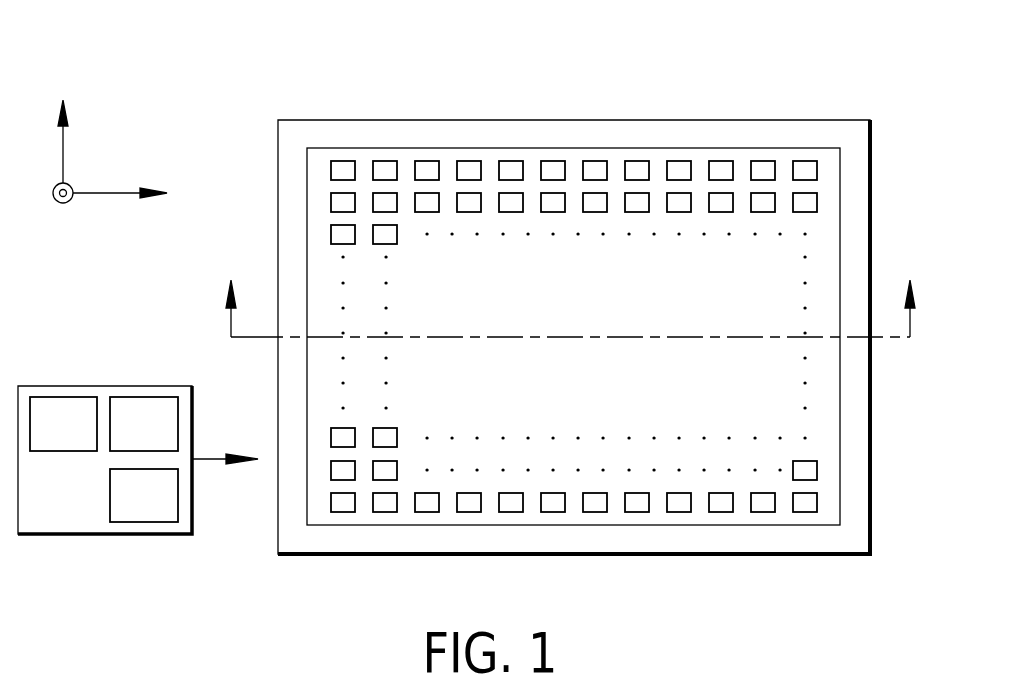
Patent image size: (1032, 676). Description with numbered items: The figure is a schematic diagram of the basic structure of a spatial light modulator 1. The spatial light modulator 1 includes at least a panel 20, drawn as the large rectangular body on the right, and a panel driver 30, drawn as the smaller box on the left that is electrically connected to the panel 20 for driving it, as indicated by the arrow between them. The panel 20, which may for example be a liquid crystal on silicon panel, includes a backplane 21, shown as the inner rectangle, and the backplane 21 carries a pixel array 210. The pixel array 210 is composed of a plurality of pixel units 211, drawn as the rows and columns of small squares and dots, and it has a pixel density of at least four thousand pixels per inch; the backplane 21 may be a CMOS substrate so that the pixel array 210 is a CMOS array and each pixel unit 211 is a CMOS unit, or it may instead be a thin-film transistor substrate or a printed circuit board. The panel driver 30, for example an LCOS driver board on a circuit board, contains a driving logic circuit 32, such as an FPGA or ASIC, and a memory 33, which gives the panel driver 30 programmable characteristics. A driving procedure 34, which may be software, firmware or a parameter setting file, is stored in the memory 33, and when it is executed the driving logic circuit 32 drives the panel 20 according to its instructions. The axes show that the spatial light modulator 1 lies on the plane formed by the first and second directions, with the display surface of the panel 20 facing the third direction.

The spatial light modulator 1 is at (830, 36).
The panel 20 is at (575, 120).
The backplane 21 is at (694, 148).
The pixel array 210 is at (824, 187).
The pixel unit 211 is at (810, 503).
The panel driver 30 is at (103, 386).
The driving logic circuit 32 is at (63, 424).
The memory 33 is at (144, 424).
The driving procedure 34 is at (144, 495).